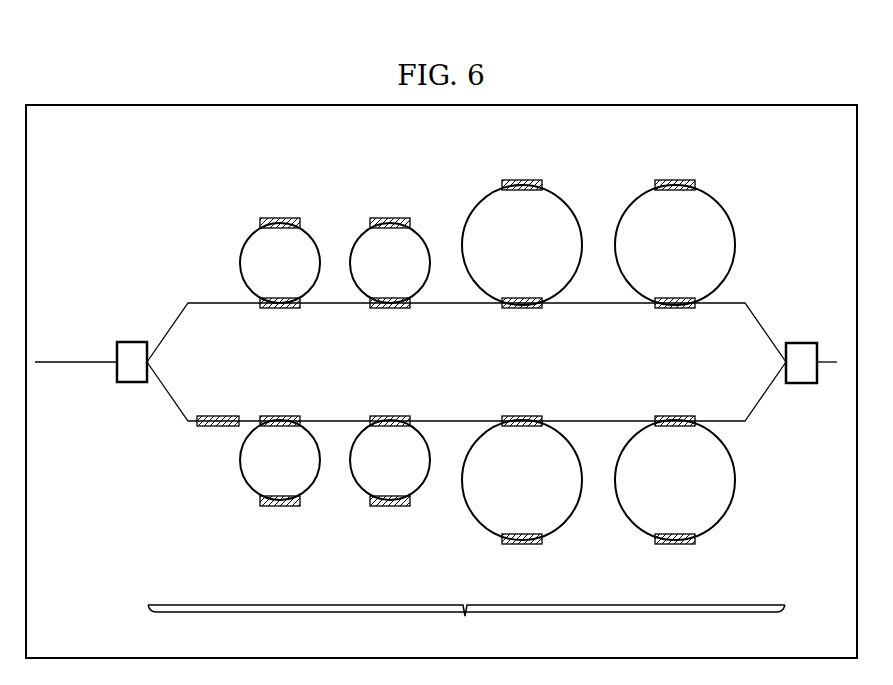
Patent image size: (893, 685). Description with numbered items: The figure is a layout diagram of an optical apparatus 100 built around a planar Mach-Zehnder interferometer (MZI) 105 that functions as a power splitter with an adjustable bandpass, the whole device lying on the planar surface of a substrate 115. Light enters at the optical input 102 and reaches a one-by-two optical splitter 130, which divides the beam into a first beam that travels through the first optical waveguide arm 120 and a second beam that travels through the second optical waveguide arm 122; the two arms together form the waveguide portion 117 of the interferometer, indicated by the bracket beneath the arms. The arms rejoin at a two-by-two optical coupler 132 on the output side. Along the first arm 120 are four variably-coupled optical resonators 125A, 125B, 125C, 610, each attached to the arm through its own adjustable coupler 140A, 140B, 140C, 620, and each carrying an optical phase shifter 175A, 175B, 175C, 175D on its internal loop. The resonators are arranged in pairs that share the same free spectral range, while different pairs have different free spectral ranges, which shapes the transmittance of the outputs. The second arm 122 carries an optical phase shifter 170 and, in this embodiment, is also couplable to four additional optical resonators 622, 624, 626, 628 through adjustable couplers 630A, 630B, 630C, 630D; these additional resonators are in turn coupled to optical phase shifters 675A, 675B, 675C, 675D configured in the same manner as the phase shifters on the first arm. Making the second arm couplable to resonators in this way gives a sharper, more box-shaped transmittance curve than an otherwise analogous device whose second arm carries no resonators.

The apparatus 100 is at (220, 57).
The Mach-Zehnder interferometer 105 is at (107, 173).
The substrate 115 is at (637, 104).
The optical input 102 is at (77, 360).
The 1×2 optical splitter 130 is at (130, 382).
The 2×2 optical coupler 132 is at (798, 383).
The first optical waveguide arm 120 is at (163, 332).
The second optical waveguide arm 122 is at (165, 388).
The optical phase shifter 170 is at (217, 427).
The optical resonator 125A is at (257, 274).
The optical resonator 125B is at (367, 274).
The optical resonator 125C is at (499, 256).
The optical resonator 610 is at (657, 256).
The optical resonator 622 is at (262, 471).
The optical resonator 624 is at (372, 471).
The optical resonator 626 is at (504, 491).
The optical resonator 628 is at (657, 491).
The optical phase shifter 175A is at (283, 218).
The optical phase shifter 175B is at (393, 218).
The optical phase shifter 175C is at (520, 180).
The optical phase shifter 175D is at (673, 180).
The adjustable coupler 140A is at (290, 308).
The adjustable coupler 140B is at (400, 308).
The adjustable coupler 140C is at (530, 309).
The adjustable optical coupler 620 is at (683, 309).
The adjustable coupler 630A is at (270, 416).
The adjustable coupler 630B is at (380, 416).
The adjustable coupler 630C is at (510, 417).
The adjustable coupler 630D is at (662, 417).
The optical phase shifter 675A is at (278, 506).
The optical phase shifter 675B is at (388, 506).
The optical phase shifter 675C is at (520, 544).
The optical phase shifter 675D is at (672, 544).
The waveguide portion 117 is at (466, 623).